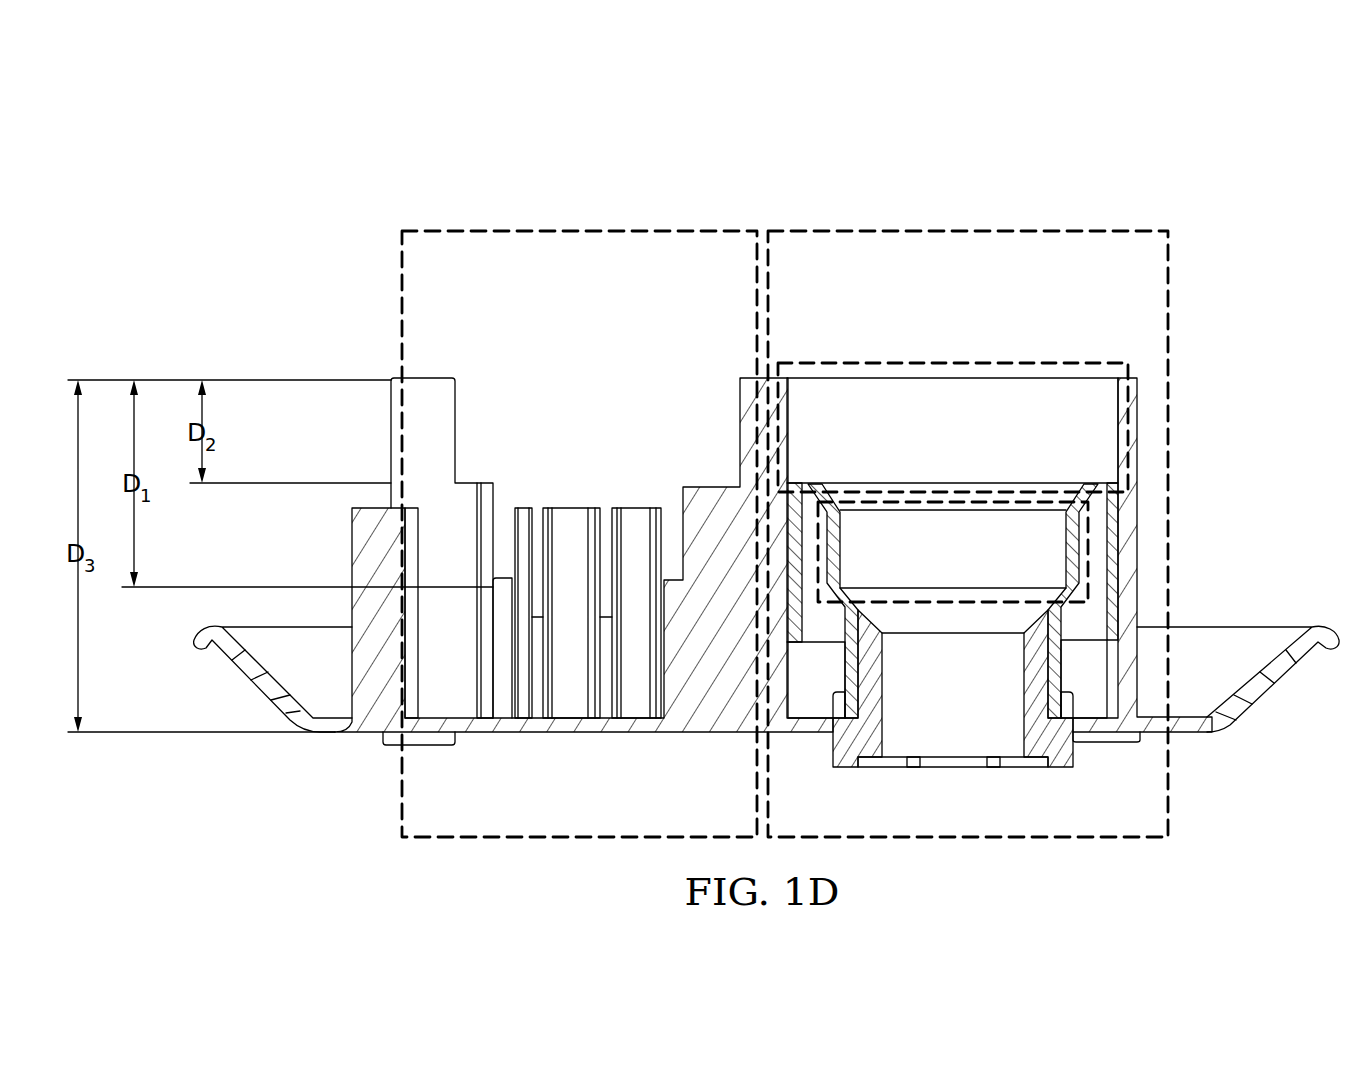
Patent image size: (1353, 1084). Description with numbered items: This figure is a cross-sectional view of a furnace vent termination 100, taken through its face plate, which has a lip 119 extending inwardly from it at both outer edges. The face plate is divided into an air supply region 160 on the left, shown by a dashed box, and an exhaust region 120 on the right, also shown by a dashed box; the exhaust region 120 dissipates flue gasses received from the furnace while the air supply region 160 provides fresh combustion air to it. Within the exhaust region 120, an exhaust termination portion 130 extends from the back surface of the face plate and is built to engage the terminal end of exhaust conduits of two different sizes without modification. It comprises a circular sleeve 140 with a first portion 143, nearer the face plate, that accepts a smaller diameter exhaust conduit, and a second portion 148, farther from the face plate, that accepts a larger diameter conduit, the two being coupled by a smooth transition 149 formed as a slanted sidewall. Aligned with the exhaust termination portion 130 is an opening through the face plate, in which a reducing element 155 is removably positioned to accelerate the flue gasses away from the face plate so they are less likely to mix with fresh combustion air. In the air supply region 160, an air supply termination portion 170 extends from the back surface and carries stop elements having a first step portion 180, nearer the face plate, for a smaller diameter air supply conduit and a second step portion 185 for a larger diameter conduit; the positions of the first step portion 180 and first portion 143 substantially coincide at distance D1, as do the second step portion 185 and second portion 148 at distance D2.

The termination 100 is at (418, 149).
The lip 119 is at (1268, 625).
The exhaust region 120 is at (1179, 263).
The exhaust termination portion 130 is at (1222, 411).
The sleeve 140 is at (1051, 328).
The first portion 143 is at (926, 616).
The second portion 148 is at (884, 351).
The smooth transition 149 is at (859, 576).
The reducing element 155 is at (954, 737).
The air supply region 160 is at (392, 265).
The air supply termination portion 170 is at (343, 436).
The first step portion 180 is at (497, 578).
The second step portion 185 is at (469, 482).